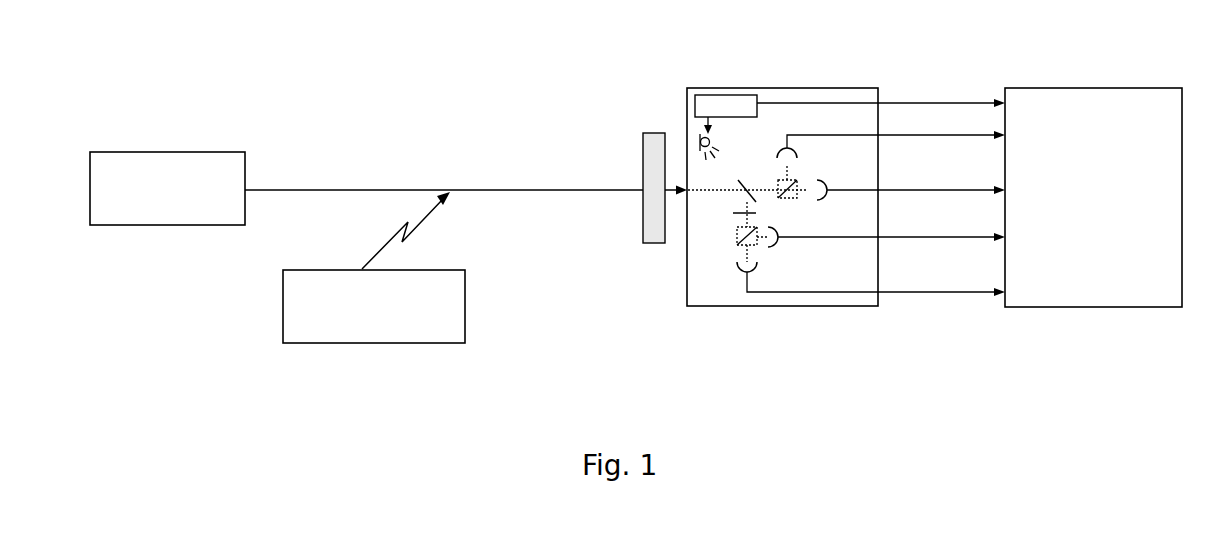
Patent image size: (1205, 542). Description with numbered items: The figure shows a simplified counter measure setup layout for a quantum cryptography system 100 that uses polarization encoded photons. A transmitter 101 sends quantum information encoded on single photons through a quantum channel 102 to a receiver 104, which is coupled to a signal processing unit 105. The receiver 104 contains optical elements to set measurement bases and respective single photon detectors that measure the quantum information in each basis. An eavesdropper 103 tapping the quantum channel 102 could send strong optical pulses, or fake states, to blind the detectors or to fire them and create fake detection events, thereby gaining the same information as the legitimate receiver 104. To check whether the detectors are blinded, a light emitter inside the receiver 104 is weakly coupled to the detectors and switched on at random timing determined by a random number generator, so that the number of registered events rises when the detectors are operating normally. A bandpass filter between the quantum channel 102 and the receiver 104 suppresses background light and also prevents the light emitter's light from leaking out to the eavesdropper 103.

The quantum cryptography system 100 is at (541, 112).
The transmitter 101 is at (160, 152).
The quantum channel 102 is at (373, 190).
The eavesdropper 103 is at (283, 310).
The receiver 104 is at (795, 312).
The signal processing unit 105 is at (1105, 313).